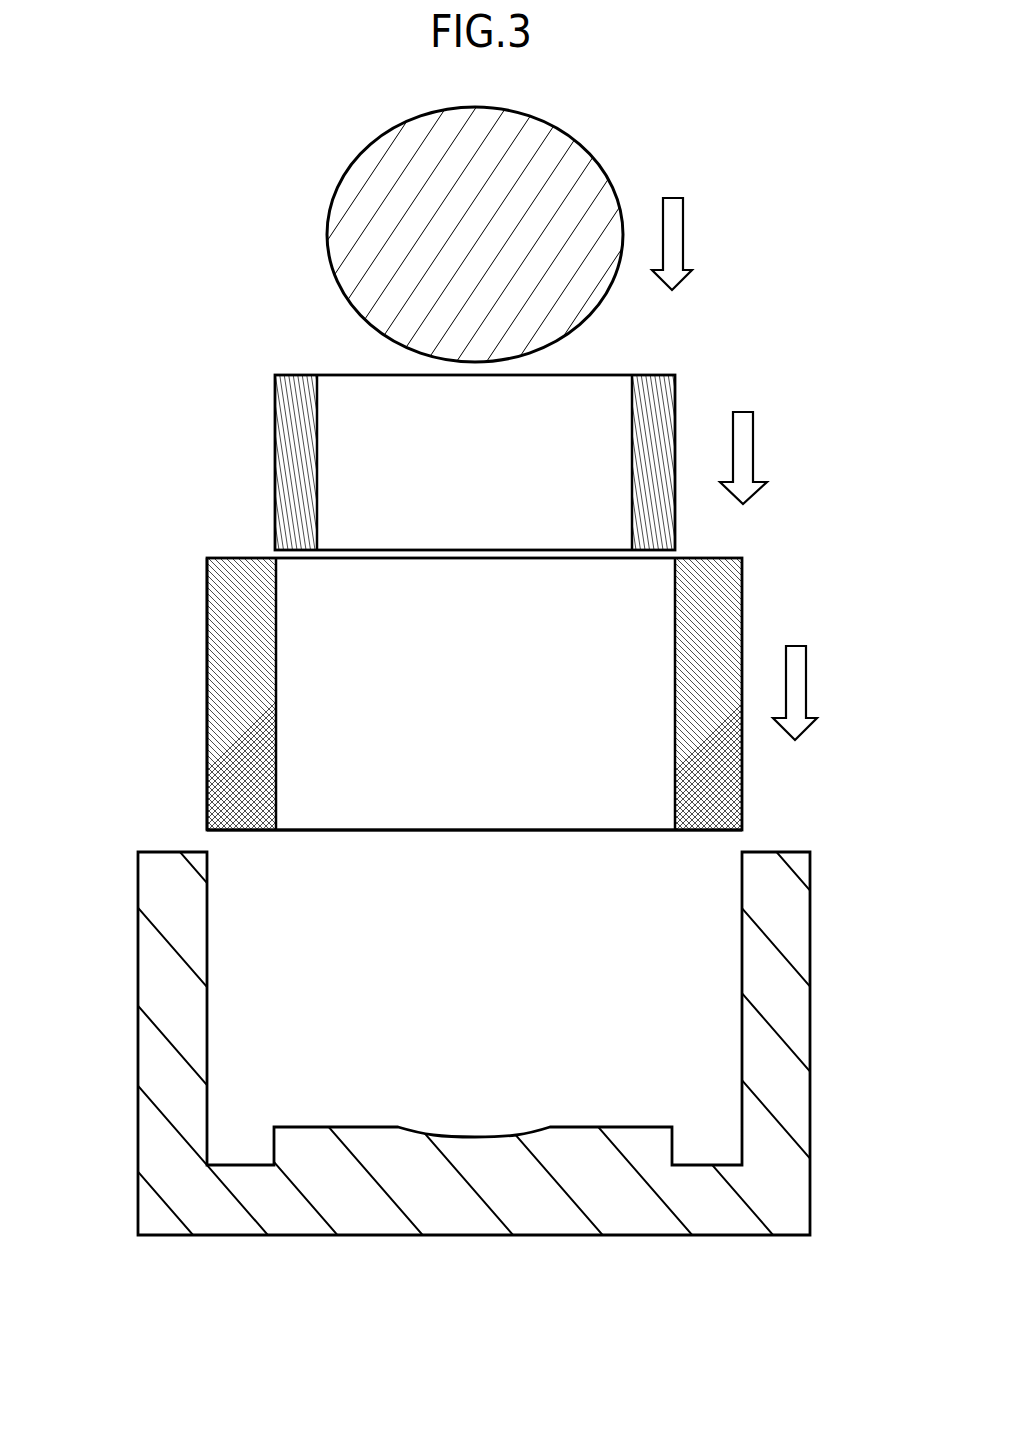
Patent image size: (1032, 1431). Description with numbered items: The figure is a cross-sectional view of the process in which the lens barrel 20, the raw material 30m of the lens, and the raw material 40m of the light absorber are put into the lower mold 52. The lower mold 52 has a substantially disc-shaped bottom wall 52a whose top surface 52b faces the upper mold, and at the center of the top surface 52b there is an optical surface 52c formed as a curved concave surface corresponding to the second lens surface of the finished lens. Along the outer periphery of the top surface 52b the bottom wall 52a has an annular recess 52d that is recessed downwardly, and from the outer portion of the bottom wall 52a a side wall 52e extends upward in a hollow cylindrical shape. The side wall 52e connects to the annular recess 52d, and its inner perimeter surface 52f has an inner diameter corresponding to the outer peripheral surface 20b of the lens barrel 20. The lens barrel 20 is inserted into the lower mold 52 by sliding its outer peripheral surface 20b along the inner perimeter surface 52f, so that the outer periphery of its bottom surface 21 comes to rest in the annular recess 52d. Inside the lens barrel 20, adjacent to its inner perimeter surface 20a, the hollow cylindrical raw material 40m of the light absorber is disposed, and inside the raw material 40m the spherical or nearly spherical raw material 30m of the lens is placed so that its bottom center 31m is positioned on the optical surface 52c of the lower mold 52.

The raw material of the lens 30m is at (373, 207).
The bottom center of the raw material 31m is at (467, 361).
The raw material of the light absorber 40m is at (290, 452).
The lens barrel 20 is at (524, 805).
The inner perimeter surface 20a is at (275, 632).
The outer peripheral surface 20b is at (207, 787).
The bottom surface 21 is at (488, 832).
The lower mold 52 is at (533, 752).
The bottom wall 52a is at (467, 1210).
The top surface 52b is at (312, 1127).
The optical surface 52c is at (470, 1137).
The annular recess 52d is at (238, 1165).
The side wall 52e is at (170, 982).
The inner perimeter surface 52f is at (207, 930).